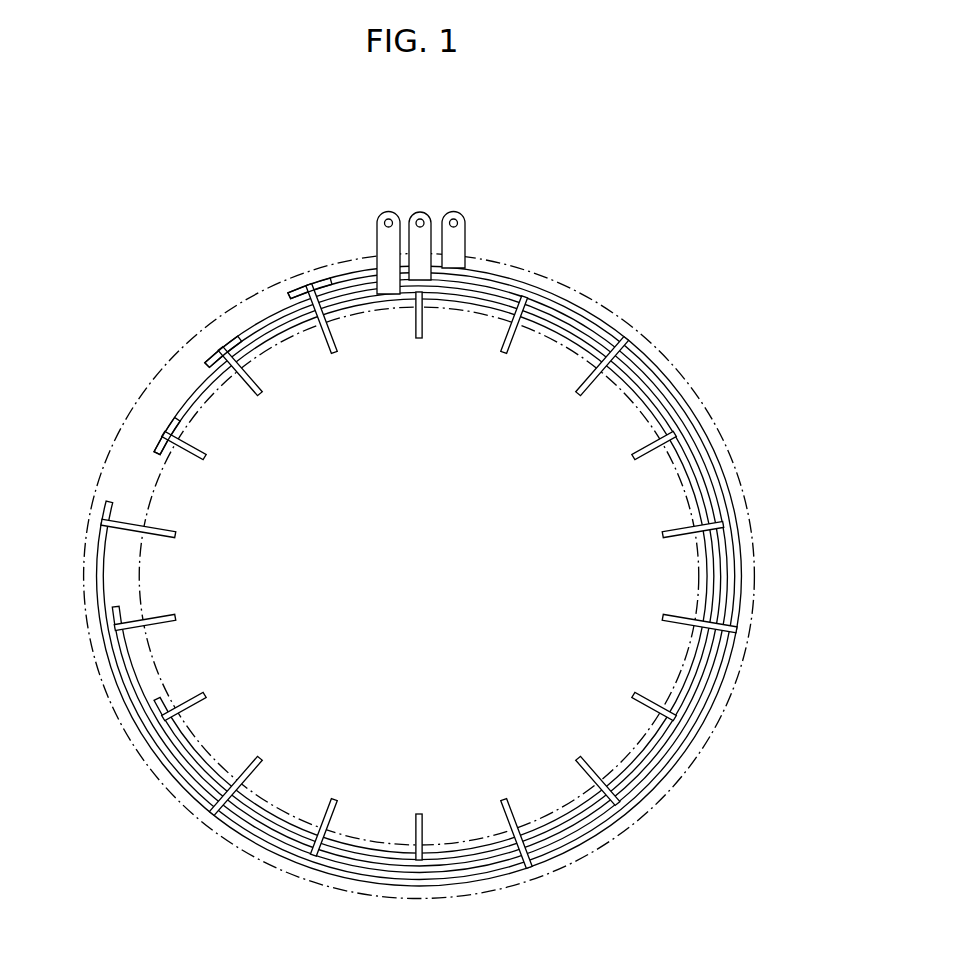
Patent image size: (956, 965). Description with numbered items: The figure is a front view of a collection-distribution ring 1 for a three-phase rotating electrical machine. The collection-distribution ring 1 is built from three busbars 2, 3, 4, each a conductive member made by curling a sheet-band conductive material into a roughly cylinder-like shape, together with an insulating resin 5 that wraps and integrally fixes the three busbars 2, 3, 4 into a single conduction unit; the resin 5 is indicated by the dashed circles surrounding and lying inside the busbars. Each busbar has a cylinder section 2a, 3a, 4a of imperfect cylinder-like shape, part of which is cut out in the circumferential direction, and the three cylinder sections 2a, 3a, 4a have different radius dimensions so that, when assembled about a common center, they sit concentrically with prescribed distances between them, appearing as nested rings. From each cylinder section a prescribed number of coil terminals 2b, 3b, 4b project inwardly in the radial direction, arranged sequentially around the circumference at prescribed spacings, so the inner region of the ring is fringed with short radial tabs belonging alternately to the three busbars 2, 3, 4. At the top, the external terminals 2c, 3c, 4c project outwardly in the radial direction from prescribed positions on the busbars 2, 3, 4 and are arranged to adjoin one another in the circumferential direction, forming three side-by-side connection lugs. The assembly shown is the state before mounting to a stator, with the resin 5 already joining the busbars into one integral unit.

The collection-distribution ring 1 is at (440, 523).
The busbar 2 is at (292, 288).
The cylinder section 2a is at (742, 586).
The coil terminal 2b is at (325, 352).
The external terminal 2c is at (465, 228).
The busbar 3 is at (204, 356).
The cylinder section 3a is at (737, 547).
The coil terminal 3b is at (262, 396).
The external terminal 3c is at (420, 212).
The busbar 4 is at (150, 449).
The cylinder section 4a is at (695, 466).
The coil terminal 4b is at (421, 340).
The external terminal 4c is at (377, 227).
The insulating resin 5 is at (584, 268).